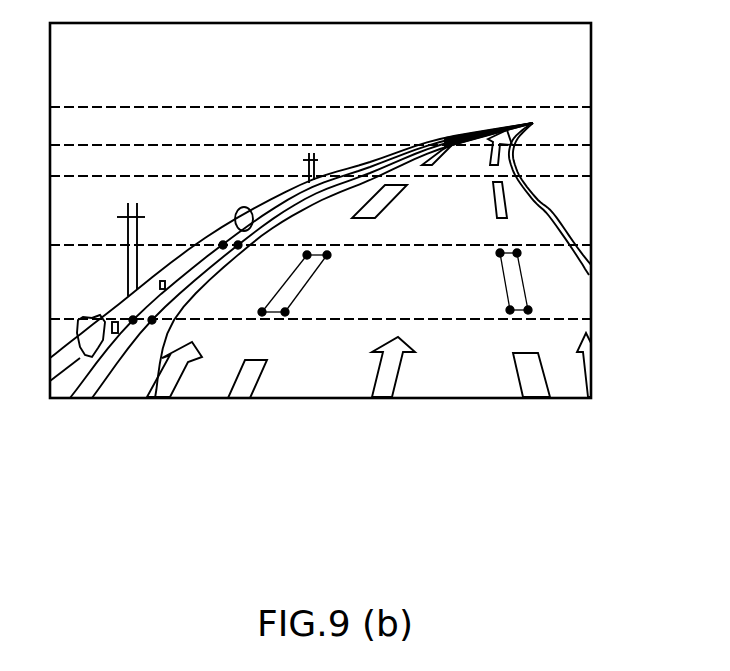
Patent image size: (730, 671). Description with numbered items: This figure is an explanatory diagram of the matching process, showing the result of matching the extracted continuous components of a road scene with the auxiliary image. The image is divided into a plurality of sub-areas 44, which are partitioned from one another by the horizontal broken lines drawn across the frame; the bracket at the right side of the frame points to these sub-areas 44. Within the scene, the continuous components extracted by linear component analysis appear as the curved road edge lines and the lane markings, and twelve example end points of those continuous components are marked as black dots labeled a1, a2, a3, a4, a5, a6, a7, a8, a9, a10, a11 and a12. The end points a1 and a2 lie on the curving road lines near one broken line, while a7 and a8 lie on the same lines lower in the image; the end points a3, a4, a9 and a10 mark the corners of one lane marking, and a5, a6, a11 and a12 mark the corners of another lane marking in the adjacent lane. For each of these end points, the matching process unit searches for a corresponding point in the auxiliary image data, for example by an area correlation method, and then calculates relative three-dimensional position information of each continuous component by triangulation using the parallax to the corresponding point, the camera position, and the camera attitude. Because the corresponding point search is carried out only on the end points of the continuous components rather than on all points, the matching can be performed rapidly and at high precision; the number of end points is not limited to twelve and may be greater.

The sub-areas 44 is at (597, 350).
The end point a1 is at (222, 245).
The end point a2 is at (238, 249).
The end point a3 is at (305, 253).
The end point a4 is at (329, 253).
The end point a5 is at (498, 252).
The end point a6 is at (517, 250).
The end point a7 is at (133, 320).
The end point a8 is at (152, 324).
The end point a9 is at (262, 316).
The end point a10 is at (285, 316).
The end point a11 is at (508, 312).
The end point a12 is at (530, 310).